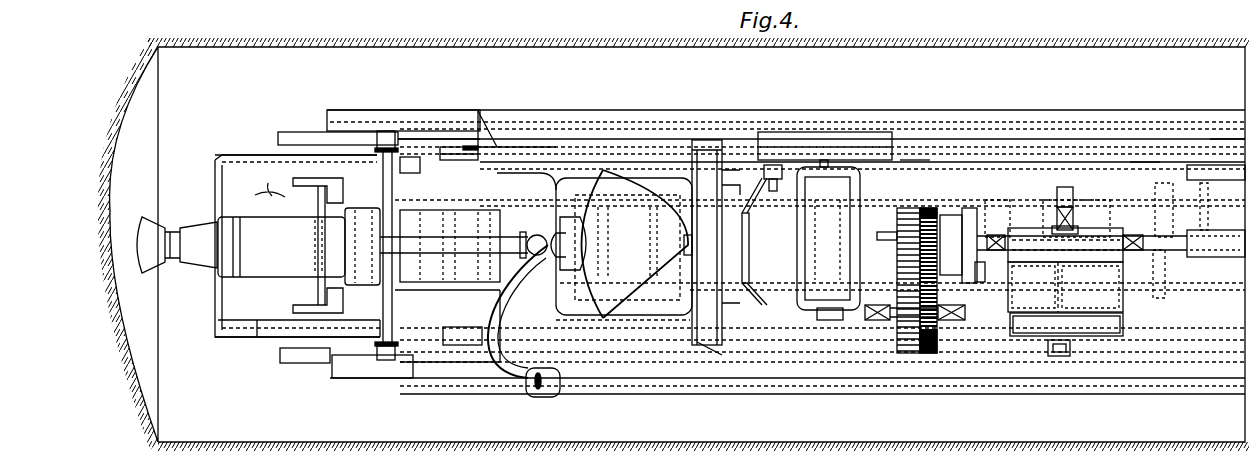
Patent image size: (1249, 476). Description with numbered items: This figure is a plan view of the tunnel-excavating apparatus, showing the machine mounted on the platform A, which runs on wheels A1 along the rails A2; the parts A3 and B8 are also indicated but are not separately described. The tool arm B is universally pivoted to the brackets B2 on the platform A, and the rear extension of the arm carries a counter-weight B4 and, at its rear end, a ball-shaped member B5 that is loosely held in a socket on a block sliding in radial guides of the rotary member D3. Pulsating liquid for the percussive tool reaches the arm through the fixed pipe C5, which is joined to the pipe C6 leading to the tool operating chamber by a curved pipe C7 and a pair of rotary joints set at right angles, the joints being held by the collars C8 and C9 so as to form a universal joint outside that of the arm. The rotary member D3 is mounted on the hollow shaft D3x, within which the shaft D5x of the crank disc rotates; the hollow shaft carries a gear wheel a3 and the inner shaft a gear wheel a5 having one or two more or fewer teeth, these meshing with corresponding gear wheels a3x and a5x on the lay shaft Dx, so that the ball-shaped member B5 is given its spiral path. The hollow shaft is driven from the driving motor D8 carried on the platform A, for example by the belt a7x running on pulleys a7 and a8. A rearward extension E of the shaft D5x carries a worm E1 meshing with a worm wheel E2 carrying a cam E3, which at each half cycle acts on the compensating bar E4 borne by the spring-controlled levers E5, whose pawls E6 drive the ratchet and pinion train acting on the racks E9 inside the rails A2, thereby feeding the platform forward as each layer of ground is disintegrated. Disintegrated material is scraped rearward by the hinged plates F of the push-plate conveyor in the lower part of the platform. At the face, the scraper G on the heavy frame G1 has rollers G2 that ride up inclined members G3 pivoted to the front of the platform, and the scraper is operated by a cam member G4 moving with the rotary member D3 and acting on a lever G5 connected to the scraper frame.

The platform A is at (640, 320).
The wheels A1 is at (481, 111).
The rails A2 is at (1180, 118).
The tube section A3 is at (421, 138).
The tool arm B is at (283, 233).
The brackets B2 is at (531, 190).
The counter-weight B4 is at (630, 295).
The ball-shaped member B5 is at (670, 293).
The eyepiece B8 is at (153, 243).
The pipe C5 is at (1088, 370).
The pipe C6 is at (493, 258).
The curved pipe C7 is at (500, 345).
The collar C8 is at (547, 397).
The collar C9 is at (566, 232).
The rotary member D3 is at (703, 342).
The hollow shaft D3x is at (878, 237).
The lay shaft Dx is at (892, 325).
The shaft D5x is at (937, 237).
The driving motor D8 is at (1220, 217).
The rearward extension E is at (1010, 207).
The worm E1 is at (1087, 281).
The worm wheel E2 is at (1085, 235).
The cam E3 is at (1090, 287).
The compensating bar E4 is at (1033, 287).
The spring controlled levers E5 is at (1137, 347).
The pawls E6 is at (1053, 340).
The racks E9 is at (451, 156).
The hinged plates F is at (387, 363).
The scraper G is at (217, 288).
The heavy frame G1 is at (262, 157).
The rollers G2 is at (385, 132).
The inclined members G3 is at (338, 132).
The cam member G4 is at (751, 195).
The lever G5 is at (774, 170).
The gear wheel a3 is at (915, 160).
The gear wheel a3x is at (908, 347).
The gear wheel a5 is at (930, 207).
The gear wheel a5x is at (935, 347).
The pulley a7 is at (854, 137).
The belt a7x is at (1142, 152).
The pulley a8 is at (1220, 132).